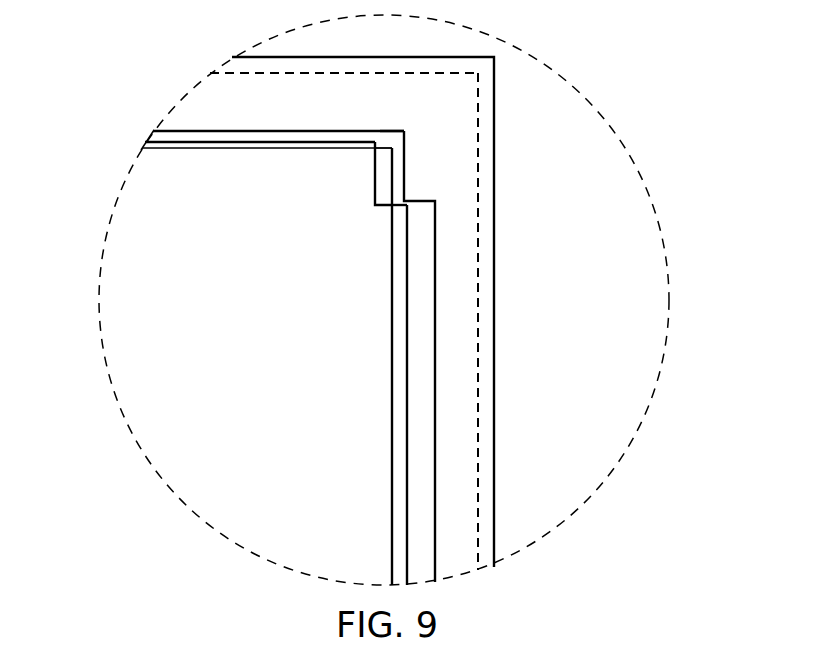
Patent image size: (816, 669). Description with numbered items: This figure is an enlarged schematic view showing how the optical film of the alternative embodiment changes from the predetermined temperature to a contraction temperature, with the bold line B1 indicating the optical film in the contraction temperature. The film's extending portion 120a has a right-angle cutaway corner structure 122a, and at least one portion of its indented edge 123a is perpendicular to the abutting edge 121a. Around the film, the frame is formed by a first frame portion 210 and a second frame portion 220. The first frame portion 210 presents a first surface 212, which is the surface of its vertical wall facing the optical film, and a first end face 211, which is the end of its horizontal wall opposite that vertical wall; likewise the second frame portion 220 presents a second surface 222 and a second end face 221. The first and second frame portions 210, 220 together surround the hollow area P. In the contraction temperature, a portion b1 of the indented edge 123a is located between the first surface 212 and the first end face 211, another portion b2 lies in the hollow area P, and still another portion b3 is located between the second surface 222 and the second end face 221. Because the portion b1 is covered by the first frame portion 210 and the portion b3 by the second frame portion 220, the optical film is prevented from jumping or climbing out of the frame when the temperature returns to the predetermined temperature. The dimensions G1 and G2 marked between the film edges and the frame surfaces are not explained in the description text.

The first frame portion 210 is at (463, 270).
The first surface 212 is at (480, 390).
The second surface 222 is at (275, 72).
The second frame portion 220 is at (205, 102).
The second end face 221 is at (183, 150).
The bold line B1 is at (260, 143).
The still another portion of the indented edge b3 is at (385, 150).
The hollow area P is at (386, 152).
The cutaway corner structure 122a is at (421, 161).
The another portion of the indented edge b2 is at (379, 196).
The indented edge 123a is at (422, 199).
The portion of the indented edge b1 is at (398, 207).
The first end face 211 is at (392, 388).
The abutting edge 121a is at (437, 485).
The extending portion 120a is at (430, 537).
The first gap G1 is at (535, 314).
The second gap G2 is at (520, 436).